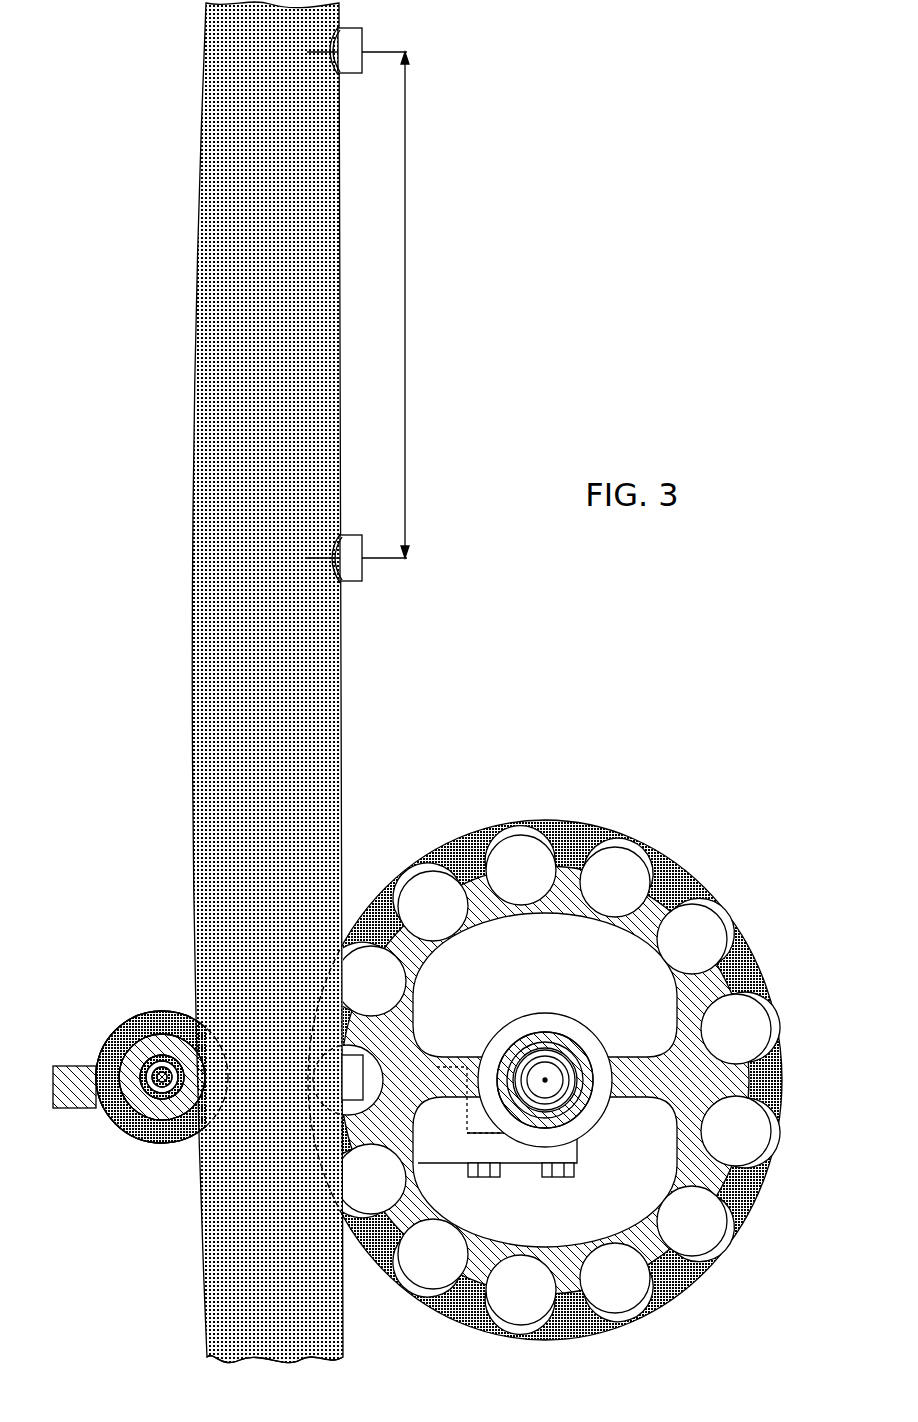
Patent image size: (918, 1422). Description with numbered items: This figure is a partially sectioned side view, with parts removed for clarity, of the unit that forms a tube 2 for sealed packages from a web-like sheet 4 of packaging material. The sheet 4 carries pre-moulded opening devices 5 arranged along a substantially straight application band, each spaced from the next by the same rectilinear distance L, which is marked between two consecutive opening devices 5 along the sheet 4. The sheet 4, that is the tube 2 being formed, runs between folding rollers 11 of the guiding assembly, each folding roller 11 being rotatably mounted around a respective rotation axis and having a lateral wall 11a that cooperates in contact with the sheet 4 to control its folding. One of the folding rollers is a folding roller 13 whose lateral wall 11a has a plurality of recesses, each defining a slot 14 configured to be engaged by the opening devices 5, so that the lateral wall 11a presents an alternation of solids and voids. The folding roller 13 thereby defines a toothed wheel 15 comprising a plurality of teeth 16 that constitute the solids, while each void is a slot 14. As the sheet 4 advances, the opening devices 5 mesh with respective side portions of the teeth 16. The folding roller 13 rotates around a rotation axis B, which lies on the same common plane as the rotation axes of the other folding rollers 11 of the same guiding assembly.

The tube 2 is at (228, 1307).
The web-like sheet of packaging material 4 is at (217, 553).
The opening devices 5 is at (348, 48).
The folding rollers 11 is at (158, 1115).
The lateral wall 11a is at (162, 1002).
The folding roller 13 is at (758, 942).
The slot 14 is at (437, 900).
The toothed wheel 15 is at (787, 1077).
The teeth 16 is at (415, 888).
The rotation axis B is at (545, 1076).
The distance L is at (365, 305).